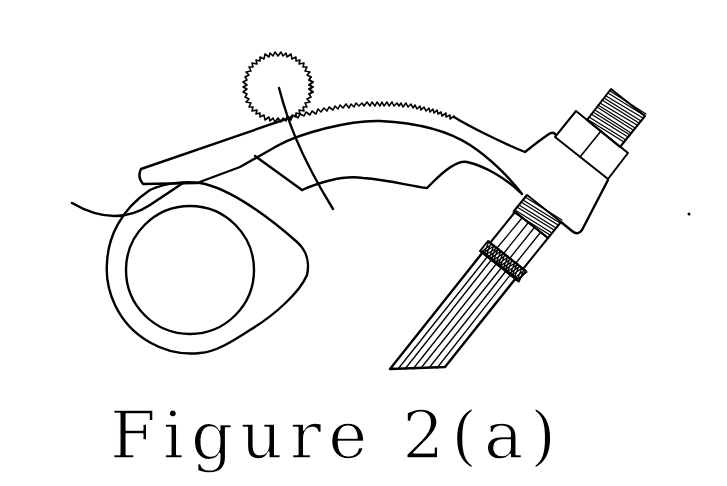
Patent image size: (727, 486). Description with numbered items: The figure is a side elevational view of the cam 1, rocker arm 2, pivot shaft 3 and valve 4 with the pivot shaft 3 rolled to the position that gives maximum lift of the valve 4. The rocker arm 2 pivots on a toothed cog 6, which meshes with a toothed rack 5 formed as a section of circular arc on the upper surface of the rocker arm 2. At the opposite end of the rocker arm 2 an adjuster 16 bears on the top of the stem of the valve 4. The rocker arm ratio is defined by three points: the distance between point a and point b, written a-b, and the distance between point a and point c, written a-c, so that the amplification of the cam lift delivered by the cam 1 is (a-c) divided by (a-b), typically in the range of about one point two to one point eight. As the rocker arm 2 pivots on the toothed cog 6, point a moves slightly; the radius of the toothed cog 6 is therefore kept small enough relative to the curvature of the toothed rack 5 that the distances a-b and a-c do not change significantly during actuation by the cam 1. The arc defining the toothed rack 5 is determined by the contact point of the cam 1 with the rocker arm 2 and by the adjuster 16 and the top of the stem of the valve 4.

The cam 1 is at (108, 275).
The rocker arm 2 is at (205, 168).
The pivot shaft 3 is at (257, 88).
The valve 4 is at (482, 320).
The toothed rack 5 is at (368, 94).
The toothed cog 6 is at (310, 90).
The adjuster 16 is at (592, 108).
The point a is at (316, 160).
The point b is at (117, 194).
The point c is at (527, 237).